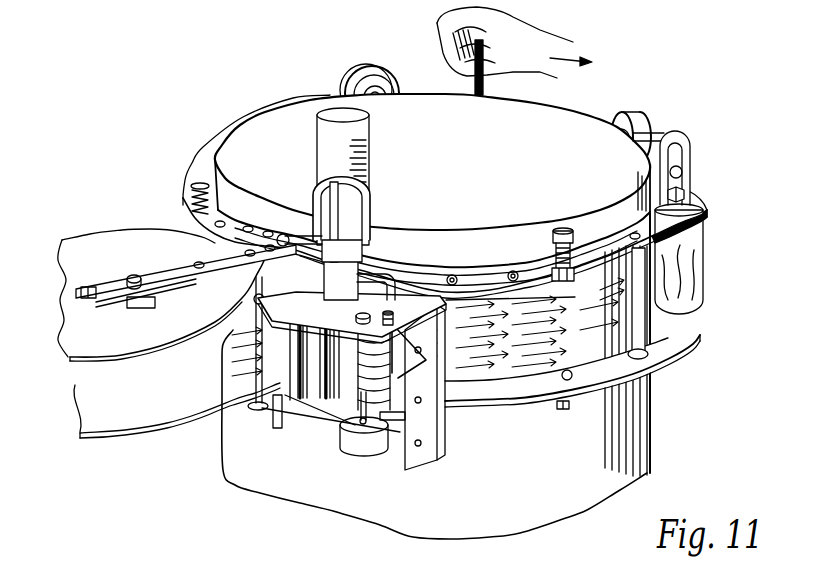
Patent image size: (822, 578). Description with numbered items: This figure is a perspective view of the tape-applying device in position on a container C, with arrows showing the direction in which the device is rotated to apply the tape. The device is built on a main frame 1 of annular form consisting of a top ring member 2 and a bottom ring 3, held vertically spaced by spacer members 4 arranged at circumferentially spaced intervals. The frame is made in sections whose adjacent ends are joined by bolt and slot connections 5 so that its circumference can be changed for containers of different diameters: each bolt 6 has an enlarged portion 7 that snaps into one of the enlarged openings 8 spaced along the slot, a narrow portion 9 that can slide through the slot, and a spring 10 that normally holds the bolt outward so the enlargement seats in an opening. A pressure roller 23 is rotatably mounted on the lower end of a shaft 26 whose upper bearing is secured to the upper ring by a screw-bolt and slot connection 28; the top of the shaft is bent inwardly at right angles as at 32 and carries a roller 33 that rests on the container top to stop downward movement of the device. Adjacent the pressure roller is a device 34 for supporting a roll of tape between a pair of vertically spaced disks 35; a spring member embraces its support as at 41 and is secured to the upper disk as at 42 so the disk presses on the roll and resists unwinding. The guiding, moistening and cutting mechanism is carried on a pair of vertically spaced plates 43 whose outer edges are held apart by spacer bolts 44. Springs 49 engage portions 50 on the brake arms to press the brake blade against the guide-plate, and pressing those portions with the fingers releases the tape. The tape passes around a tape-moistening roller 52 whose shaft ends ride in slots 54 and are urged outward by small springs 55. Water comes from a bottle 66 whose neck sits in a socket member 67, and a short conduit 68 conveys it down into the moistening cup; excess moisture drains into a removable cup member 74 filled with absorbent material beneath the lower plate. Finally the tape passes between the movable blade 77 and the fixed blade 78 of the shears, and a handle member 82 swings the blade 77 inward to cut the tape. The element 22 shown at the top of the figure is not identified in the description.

The main frame 1 is at (217, 143).
The top ring member 2 is at (660, 227).
The bottom ring 3 is at (660, 348).
The spacer members 4 is at (646, 328).
The bolt and slot connections 5 is at (490, 272).
The bolt 6 is at (563, 230).
The enlarged portion 7 is at (562, 283).
The enlarged openings 8 is at (452, 275).
The narrow portion 9 is at (625, 244).
The spring 10 is at (552, 250).
The operating rod handle 22 is at (473, 34).
The pressure roller 23 is at (705, 250).
The shaft 26 is at (681, 153).
The screw-bolt and slot connection 28 is at (690, 200).
The bent portion 32 is at (652, 139).
The roller 33 is at (368, 72).
The tape-roll supporting device 34 is at (115, 230).
The disks 35 is at (82, 353).
The spring end embracing the support 41 is at (88, 287).
The spring attachment to disk 42 is at (132, 307).
The plates 43 is at (313, 413).
The spacer bolts 44 is at (353, 410).
The springs 49 is at (257, 406).
The portions 50 is at (278, 418).
The tape-moistening roller 52 is at (380, 437).
The slots 54 is at (394, 305).
The small springs 55 is at (356, 306).
The bottle 66 is at (360, 160).
The socket member 67 is at (362, 247).
The short conduit 68 is at (388, 282).
The cup member 74 is at (362, 452).
The movable shear blade 77 is at (428, 410).
The fixed shear blade 78 is at (440, 353).
The handle member 82 is at (396, 421).
The casing C is at (636, 416).